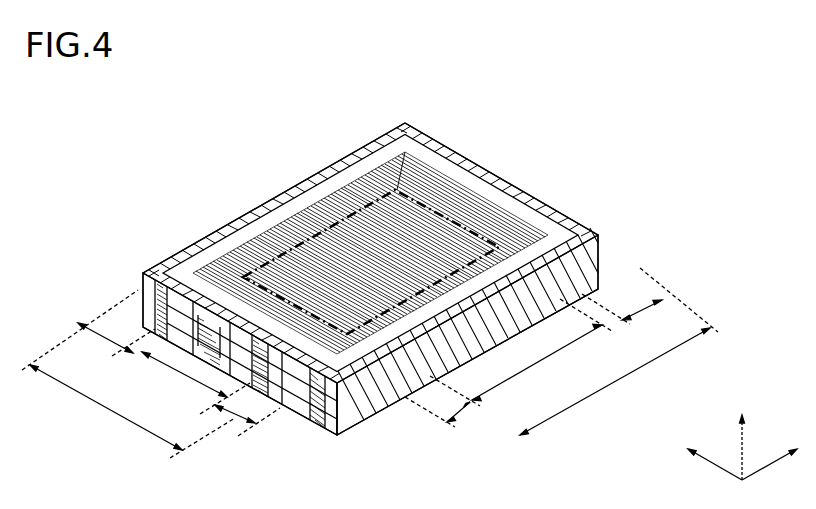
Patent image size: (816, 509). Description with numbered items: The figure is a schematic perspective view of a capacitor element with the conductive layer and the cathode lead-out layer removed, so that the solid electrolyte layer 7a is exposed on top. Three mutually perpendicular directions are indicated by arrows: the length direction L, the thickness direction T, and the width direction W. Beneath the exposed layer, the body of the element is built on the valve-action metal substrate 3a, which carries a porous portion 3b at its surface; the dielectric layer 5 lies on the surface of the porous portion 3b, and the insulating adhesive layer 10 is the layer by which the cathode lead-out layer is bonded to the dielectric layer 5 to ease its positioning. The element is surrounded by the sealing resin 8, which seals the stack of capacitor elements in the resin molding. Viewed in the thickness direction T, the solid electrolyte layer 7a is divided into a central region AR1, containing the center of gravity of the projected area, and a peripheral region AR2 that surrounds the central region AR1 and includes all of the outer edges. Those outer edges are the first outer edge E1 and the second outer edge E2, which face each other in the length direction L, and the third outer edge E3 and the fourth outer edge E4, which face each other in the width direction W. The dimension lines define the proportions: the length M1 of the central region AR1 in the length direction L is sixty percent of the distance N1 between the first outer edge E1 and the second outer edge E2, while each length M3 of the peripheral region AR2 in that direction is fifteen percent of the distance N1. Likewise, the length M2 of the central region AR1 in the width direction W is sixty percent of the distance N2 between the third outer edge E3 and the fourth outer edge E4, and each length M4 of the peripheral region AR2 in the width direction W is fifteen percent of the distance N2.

The insulating adhesive layer 10 is at (250, 220).
The solid electrolyte layer 7a is at (222, 252).
The sealing resin 8 is at (580, 268).
The dielectric layer 5 is at (145, 280).
The valve-action metal substrate 3a is at (157, 305).
The porous portion 3b is at (152, 292).
The central region AR1 is at (333, 250).
The peripheral region AR2 is at (487, 210).
The first outer edge E1 is at (275, 335).
The second outer edge E2 is at (445, 172).
The third outer edge E3 is at (380, 335).
The fourth outer edge E4 is at (360, 163).
The length of central region in length direction M1 is at (542, 350).
The length of central region in width direction M2 is at (196, 383).
The length of peripheral region in length direction M3 is at (542, 367).
The length of peripheral region in width direction M4 is at (175, 379).
The distance between first and second outer edges N1 is at (619, 351).
The distance between third and fourth outer edges N2 is at (128, 374).
The thickness direction T is at (742, 431).
The width direction W is at (702, 450).
The length direction L is at (778, 450).